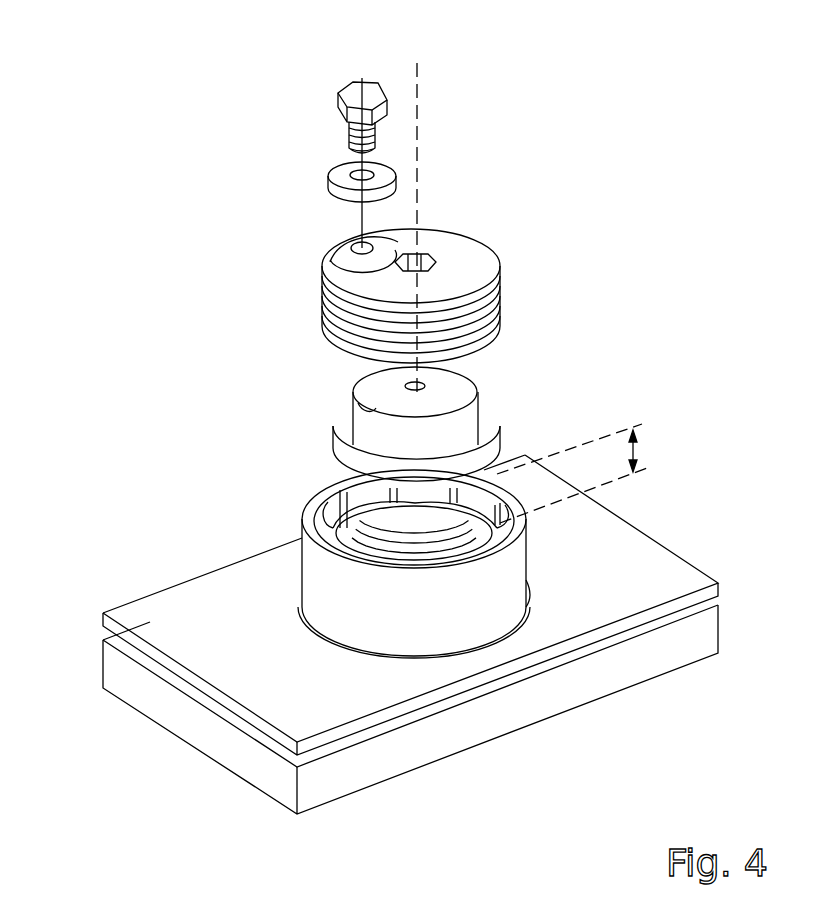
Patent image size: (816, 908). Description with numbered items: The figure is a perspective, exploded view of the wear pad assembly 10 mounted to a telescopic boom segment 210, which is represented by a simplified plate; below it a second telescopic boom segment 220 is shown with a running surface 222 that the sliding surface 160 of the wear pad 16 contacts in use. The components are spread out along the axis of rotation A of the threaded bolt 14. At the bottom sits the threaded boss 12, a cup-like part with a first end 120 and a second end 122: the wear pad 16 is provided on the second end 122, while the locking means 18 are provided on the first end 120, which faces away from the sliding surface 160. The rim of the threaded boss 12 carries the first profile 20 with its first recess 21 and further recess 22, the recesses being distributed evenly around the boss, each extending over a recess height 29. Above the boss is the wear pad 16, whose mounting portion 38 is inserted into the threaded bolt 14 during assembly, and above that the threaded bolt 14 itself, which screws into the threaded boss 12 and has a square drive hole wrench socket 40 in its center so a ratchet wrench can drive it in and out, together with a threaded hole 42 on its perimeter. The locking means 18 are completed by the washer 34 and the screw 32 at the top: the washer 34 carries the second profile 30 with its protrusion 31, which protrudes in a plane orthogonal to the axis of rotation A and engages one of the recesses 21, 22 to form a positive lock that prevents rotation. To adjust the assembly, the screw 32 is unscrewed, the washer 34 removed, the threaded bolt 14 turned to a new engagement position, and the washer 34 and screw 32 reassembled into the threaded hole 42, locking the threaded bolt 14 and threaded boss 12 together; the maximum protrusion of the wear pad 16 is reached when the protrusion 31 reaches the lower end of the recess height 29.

The wear pad assembly 10 is at (108, 194).
The threaded boss 12 is at (412, 647).
The threaded bolt 14 is at (453, 255).
The wear pad 16 is at (413, 397).
The locking means 18 is at (298, 452).
The first profile 20 is at (409, 646).
The first recess 21 is at (330, 518).
The further recess 22 is at (343, 477).
The recess height 29 is at (640, 451).
The second profile 30 is at (303, 175).
The protrusion 31 is at (330, 197).
The screw 32 is at (350, 95).
The washer 34 is at (340, 165).
The mounting portion 38 is at (360, 404).
The square drive hole wrench socket 40 is at (424, 258).
The threaded hole 42 is at (368, 246).
The first end 120 is at (348, 578).
The second end 122 is at (370, 647).
The sliding surface 160 is at (435, 487).
The telescopic boom segment 210 is at (377, 697).
The second telescopic boom segment 220 is at (410, 709).
The running surface 222 is at (580, 655).
The axis of rotation A is at (420, 96).